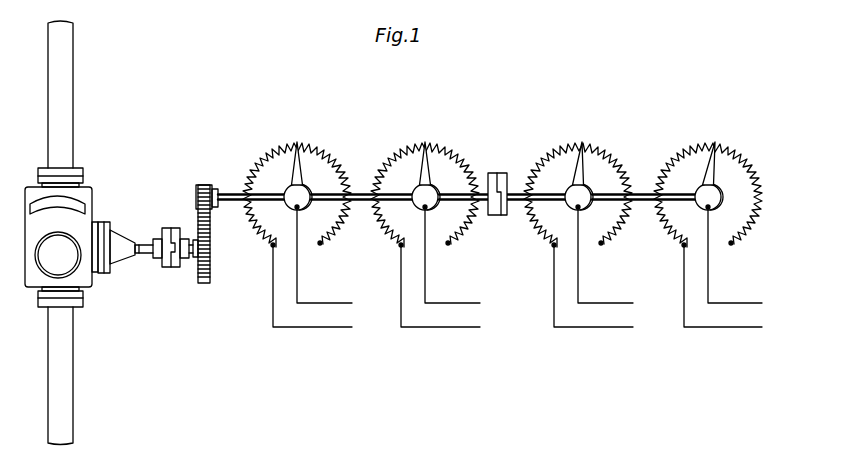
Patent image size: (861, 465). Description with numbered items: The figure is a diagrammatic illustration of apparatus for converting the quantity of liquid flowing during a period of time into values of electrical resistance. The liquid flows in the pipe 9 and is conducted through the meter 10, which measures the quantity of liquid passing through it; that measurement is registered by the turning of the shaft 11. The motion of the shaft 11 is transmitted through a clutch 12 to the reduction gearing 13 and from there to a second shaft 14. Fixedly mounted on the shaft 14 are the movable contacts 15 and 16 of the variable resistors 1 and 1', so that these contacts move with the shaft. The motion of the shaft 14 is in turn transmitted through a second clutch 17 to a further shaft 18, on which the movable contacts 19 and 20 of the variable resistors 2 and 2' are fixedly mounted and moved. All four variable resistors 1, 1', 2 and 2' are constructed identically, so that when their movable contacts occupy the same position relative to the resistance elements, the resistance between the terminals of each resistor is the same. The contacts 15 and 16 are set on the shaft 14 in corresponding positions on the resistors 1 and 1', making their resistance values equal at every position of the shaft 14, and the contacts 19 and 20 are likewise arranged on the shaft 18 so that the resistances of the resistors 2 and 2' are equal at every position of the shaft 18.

The pipe 9 is at (65, 60).
The meter 10 is at (94, 175).
The shaft 11 is at (143, 243).
The clutch 12 is at (167, 230).
The reduction gearing 13 is at (205, 284).
The variable resistor 1 is at (294, 211).
The movable contact 15 is at (297, 140).
The second shaft 14 is at (350, 193).
The movable contact 16 is at (425, 140).
The variable resistor 1' is at (425, 211).
The clutch 17 is at (495, 173).
The variable resistor 2 is at (578, 211).
The movable contact 19 is at (582, 140).
The second shaft 18 is at (637, 193).
The movable contact 20 is at (715, 140).
The variable resistor 2' is at (708, 211).